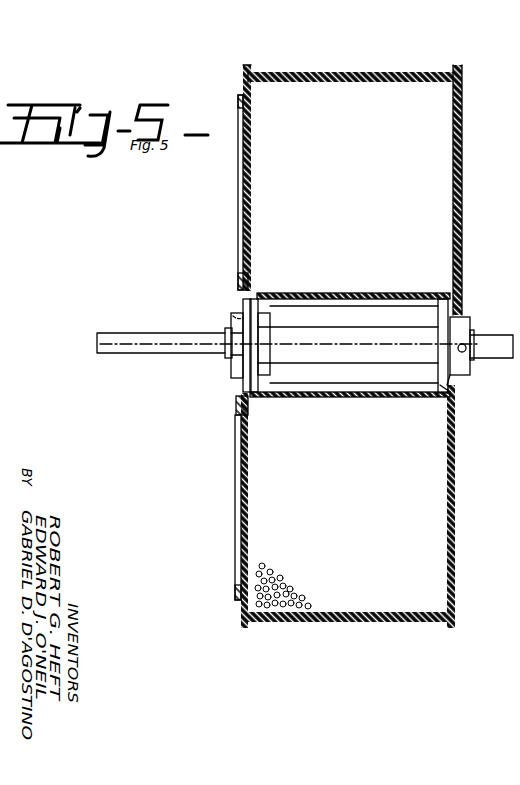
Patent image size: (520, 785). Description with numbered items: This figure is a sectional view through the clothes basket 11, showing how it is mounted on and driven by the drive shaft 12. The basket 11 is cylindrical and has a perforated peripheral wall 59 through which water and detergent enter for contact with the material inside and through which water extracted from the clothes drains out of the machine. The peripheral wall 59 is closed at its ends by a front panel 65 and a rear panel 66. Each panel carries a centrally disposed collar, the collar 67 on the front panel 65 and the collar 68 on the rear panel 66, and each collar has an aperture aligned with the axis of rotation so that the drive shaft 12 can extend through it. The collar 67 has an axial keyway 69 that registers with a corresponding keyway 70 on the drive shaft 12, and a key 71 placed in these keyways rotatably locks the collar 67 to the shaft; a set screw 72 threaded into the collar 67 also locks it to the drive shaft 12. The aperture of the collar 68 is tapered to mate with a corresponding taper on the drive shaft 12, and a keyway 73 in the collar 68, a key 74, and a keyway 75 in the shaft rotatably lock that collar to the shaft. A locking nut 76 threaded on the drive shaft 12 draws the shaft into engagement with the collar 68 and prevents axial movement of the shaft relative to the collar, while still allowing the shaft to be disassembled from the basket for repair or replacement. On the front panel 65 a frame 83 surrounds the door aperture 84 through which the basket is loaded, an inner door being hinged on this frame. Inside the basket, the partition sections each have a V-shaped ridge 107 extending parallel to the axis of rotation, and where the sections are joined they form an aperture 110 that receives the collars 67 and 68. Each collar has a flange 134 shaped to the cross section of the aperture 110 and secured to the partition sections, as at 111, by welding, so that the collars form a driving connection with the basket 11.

The basket 11 is at (340, 72).
The drive shaft 12 is at (120, 336).
The perforated peripheral wall 59 is at (322, 622).
The front panel 65 is at (248, 84).
The rear panel 66 is at (462, 100).
The collar 67 is at (458, 380).
The collar 68 is at (243, 380).
The axial keyway 69 is at (465, 318).
The keyway 70 is at (438, 344).
The key 71 is at (472, 332).
The set screw 72 is at (470, 356).
The keyway 73 is at (273, 296).
The key 74 is at (232, 320).
The keyway 75 is at (271, 342).
The locking nut 76 is at (231, 360).
The frame 83 is at (238, 102).
The door aperture 84 is at (240, 172).
The ridge 107 is at (314, 293).
The aperture 110 is at (360, 306).
The weld connection 111 is at (270, 397).
The flange 134 is at (240, 400).